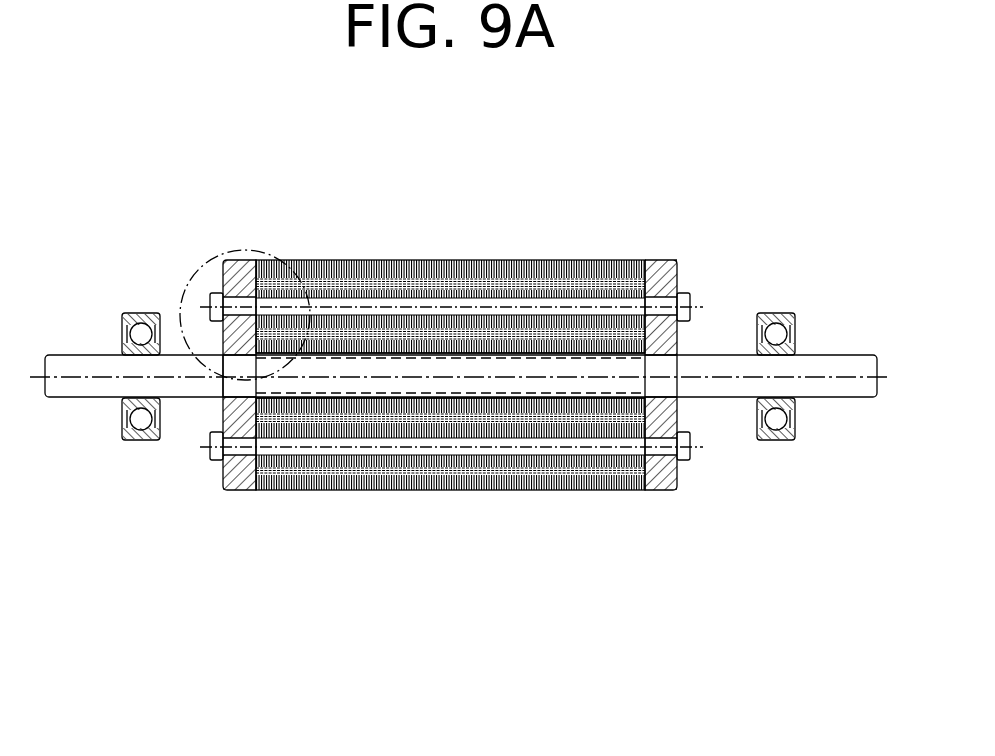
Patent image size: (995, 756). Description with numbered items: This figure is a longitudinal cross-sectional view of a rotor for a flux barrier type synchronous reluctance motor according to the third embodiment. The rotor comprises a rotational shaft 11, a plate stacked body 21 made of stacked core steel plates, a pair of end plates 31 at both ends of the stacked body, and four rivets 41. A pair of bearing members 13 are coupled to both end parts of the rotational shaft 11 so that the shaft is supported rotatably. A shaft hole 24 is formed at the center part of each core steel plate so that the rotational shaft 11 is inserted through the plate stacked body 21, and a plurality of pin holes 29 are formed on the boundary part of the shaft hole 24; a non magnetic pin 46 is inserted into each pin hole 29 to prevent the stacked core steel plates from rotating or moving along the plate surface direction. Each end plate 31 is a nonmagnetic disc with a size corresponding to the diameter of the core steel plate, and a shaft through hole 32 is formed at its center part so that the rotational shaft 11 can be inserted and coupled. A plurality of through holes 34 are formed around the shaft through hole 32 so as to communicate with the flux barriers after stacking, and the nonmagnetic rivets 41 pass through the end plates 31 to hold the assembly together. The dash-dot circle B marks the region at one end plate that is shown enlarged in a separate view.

The rotational shaft 11 is at (93, 390).
The bearing members 13 is at (125, 438).
The plate stacked body 21 is at (346, 252).
The shaft hole 24 is at (608, 355).
The pin holes 29 is at (537, 347).
The end plates 31 is at (240, 492).
The shaft through hole 32 is at (230, 355).
The through holes 34 is at (212, 308).
The rivets 41 is at (210, 302).
The non magnetic pin 46 is at (435, 357).
The detail region B is at (241, 250).